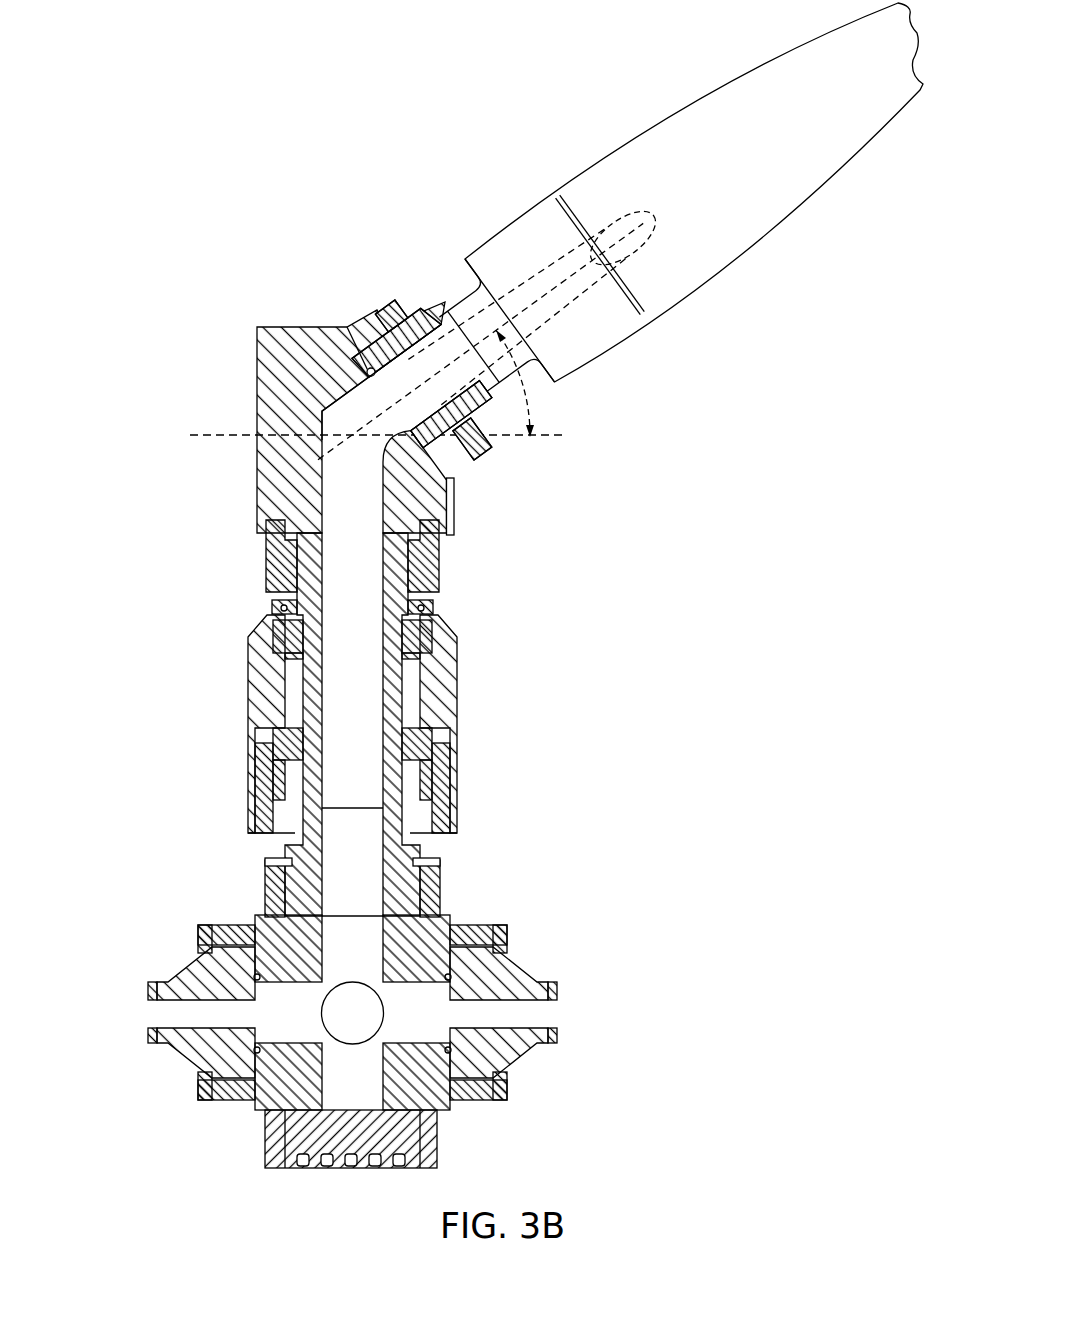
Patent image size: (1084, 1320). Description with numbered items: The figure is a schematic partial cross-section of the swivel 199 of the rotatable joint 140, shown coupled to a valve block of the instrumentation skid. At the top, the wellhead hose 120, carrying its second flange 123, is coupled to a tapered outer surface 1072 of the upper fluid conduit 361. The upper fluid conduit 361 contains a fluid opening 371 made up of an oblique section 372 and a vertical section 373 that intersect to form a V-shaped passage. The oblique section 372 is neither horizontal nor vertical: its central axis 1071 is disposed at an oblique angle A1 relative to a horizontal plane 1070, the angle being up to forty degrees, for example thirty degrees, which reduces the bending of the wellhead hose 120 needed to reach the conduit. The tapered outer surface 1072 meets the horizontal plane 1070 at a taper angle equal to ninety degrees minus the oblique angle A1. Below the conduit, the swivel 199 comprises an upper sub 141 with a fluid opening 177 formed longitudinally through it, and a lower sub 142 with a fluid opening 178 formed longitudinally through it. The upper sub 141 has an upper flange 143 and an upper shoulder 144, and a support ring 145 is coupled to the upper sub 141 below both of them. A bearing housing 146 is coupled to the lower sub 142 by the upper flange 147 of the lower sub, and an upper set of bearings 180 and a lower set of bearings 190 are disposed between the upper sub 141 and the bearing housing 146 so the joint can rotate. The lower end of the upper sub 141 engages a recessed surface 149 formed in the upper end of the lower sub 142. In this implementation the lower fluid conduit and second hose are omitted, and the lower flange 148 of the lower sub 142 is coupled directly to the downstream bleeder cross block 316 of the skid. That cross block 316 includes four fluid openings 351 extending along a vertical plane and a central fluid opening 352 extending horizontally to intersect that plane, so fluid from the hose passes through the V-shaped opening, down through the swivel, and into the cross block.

The wellhead hose 120 is at (835, 170).
The central axis 1071 is at (548, 228).
The tapered outer surface 1072 is at (324, 327).
The horizontal plane 1070 is at (203, 432).
The oblique angle A1 is at (531, 411).
The upper fluid conduit 361 is at (255, 350).
The oblique section 372 is at (312, 390).
The fluid opening 371 is at (313, 447).
The vertical section 373 is at (335, 500).
The second flange 123 is at (463, 457).
The rotatable joint 140 is at (383, 718).
The fluid opening 178 is at (360, 850).
The fluid opening 177 is at (355, 560).
The upper flange 143 is at (440, 572).
The upper shoulder 144 is at (287, 607).
The upper sub 141 is at (420, 615).
The upper set of bearings 180 is at (420, 642).
The swivel 199 is at (324, 724).
The bearing housing 146 is at (262, 692).
The lower set of bearings 190 is at (425, 735).
The recessed surface 149 is at (425, 788).
The lower sub 142 is at (420, 805).
The upper flange 147 is at (268, 790).
The support ring 145 is at (290, 797).
The lower flange 148 is at (307, 897).
The downstream bleeder cross block 316 is at (373, 1021).
The fluid openings 351 is at (268, 1000).
The central fluid opening 352 is at (420, 1103).